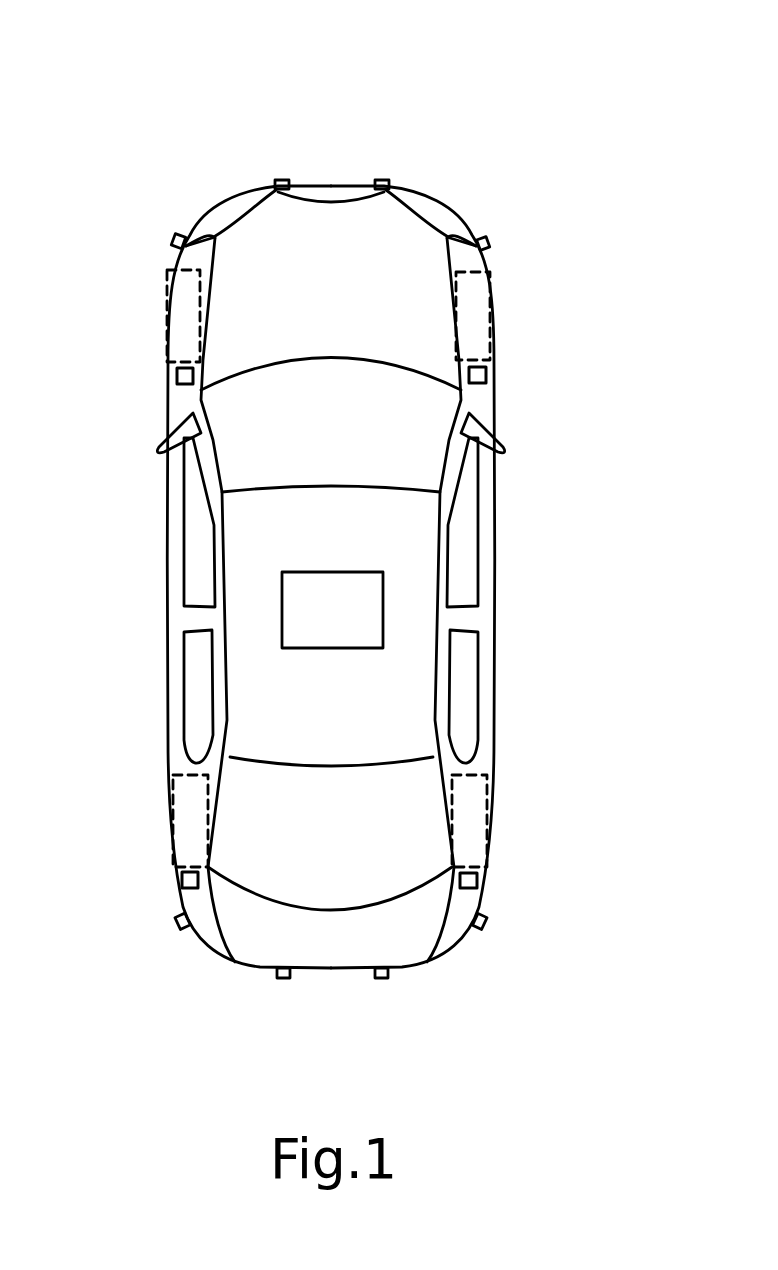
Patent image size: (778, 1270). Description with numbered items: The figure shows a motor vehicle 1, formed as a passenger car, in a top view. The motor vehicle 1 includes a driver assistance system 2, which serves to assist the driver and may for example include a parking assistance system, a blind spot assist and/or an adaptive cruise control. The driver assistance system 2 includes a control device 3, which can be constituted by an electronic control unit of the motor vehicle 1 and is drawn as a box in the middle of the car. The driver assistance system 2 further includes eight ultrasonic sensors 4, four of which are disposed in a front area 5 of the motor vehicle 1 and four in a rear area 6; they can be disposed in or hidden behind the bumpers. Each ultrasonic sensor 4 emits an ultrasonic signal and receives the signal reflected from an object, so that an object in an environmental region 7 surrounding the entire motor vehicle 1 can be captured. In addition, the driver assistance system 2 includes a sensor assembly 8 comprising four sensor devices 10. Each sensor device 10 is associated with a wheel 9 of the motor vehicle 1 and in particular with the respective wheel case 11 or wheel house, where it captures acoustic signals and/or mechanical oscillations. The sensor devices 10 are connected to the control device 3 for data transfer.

The motor vehicle 1 is at (328, 185).
The driver assistance system 2 is at (258, 532).
The control device 3 is at (363, 597).
The ultrasonic sensors 4 is at (278, 180).
The front area 5 is at (405, 100).
The rear area 6 is at (323, 1007).
The environmental region 7 is at (108, 417).
The sensor assembly 8 is at (553, 250).
The wheel 9 is at (183, 320).
The sensor device 10 is at (170, 383).
The wheel case 11 is at (157, 342).